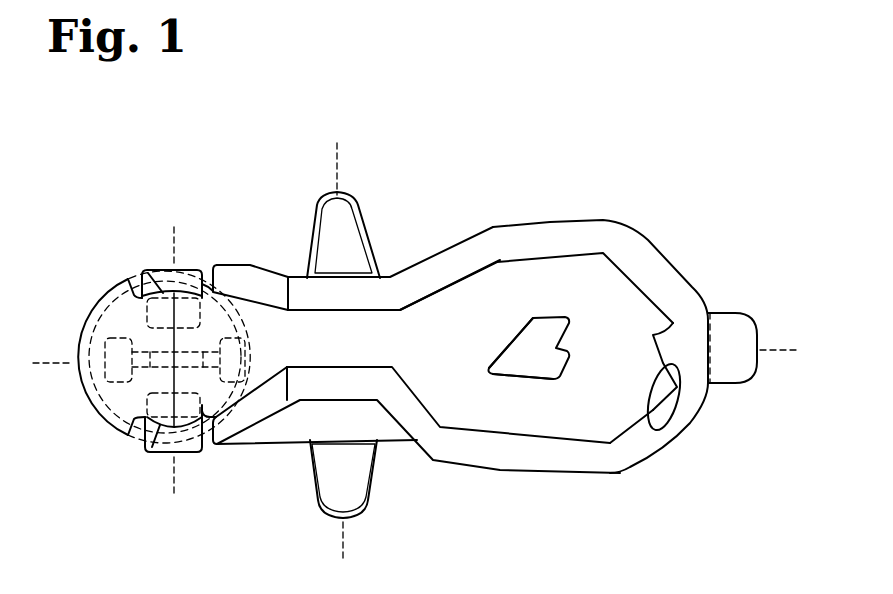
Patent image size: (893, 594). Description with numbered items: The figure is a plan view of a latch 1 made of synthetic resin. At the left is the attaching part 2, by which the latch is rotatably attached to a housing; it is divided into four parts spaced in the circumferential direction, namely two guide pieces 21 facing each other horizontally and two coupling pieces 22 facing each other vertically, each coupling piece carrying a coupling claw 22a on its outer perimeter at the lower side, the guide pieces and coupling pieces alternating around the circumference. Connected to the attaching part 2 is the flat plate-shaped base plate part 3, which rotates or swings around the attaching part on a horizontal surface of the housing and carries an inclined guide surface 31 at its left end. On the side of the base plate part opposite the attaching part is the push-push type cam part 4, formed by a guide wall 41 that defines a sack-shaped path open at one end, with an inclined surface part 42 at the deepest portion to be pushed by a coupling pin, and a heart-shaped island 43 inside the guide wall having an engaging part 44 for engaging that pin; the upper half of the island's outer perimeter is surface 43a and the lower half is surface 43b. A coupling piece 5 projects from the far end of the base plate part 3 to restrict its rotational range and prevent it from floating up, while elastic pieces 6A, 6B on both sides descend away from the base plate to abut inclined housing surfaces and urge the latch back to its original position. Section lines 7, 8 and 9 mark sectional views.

The latch 1 is at (417, 356).
The attaching part 2 is at (118, 401).
The base plate part 3 is at (600, 430).
The cam part 4 is at (558, 318).
The coupling piece 5 is at (730, 383).
The elastic piece 6A is at (352, 243).
The elastic piece 6B is at (357, 483).
The section line 7- 7 is at (48, 372).
The section line 8- 8 is at (165, 242).
The section line 9- 9 is at (330, 155).
The guide piece 21 is at (102, 322).
The coupling piece 22 is at (142, 271).
The coupling claw 22a is at (187, 288).
The guide surface 31 is at (85, 357).
The guide wall 41 is at (568, 238).
The inclined surface part 42 is at (653, 407).
The heart-shaped island 43 is at (518, 350).
The outer perimeter surface 43a is at (517, 343).
The outer perimeter surface 43b is at (520, 380).
The engaging part 44 is at (553, 350).